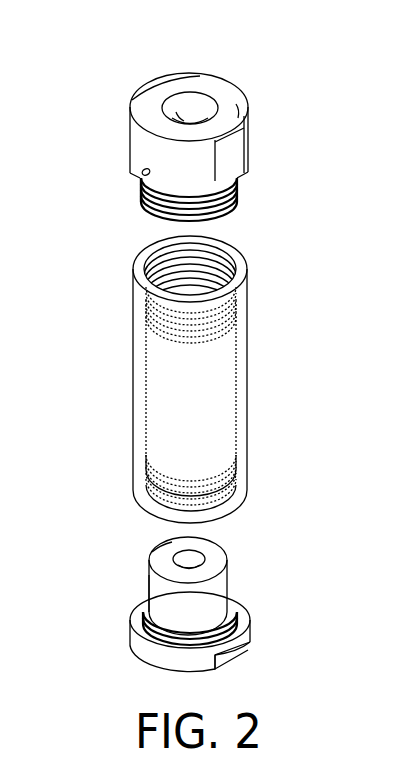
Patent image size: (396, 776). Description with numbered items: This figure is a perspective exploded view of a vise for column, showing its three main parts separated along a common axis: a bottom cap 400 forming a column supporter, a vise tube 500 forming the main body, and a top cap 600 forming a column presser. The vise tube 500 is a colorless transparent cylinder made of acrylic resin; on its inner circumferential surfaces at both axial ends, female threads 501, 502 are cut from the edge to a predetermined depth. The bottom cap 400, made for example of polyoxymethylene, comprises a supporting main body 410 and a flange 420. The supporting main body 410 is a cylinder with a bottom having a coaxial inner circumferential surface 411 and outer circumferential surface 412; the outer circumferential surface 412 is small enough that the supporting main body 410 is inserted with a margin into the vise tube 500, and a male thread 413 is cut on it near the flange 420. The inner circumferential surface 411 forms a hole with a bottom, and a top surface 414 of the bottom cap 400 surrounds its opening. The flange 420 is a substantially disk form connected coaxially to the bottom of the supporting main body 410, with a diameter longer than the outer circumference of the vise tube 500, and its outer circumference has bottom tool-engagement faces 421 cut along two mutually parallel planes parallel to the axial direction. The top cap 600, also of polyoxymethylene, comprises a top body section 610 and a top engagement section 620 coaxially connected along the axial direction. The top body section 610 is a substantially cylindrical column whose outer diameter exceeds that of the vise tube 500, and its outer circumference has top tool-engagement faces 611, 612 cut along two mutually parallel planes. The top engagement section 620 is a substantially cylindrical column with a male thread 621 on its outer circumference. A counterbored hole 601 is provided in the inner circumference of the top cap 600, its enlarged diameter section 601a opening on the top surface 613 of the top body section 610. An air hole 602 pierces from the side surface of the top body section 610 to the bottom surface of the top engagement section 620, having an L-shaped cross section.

The bottom cap 400 is at (192, 595).
The supporting main body 410 is at (239, 563).
The inner circumferential surface 411 is at (208, 557).
The outer circumferential surface 412 is at (155, 592).
The male thread 413 is at (246, 612).
The top surface 414 is at (160, 552).
The flange 420 is at (241, 640).
The bottom tool-engagement faces 421 is at (238, 660).
The vise tube 500 is at (240, 365).
The female thread 501 is at (238, 500).
The female thread 502 is at (230, 243).
The top cap 600 is at (194, 128).
The counterbored hole 601 is at (191, 88).
The enlarged diameter section 601a is at (173, 114).
The air hole 602 is at (141, 170).
The top body section 610 is at (213, 75).
The top tool-engagement face 611 is at (230, 155).
The top tool-engagement face 612 is at (139, 88).
The top surface 613 is at (240, 108).
The top engagement section 620 is at (242, 189).
The male thread 621 is at (145, 205).